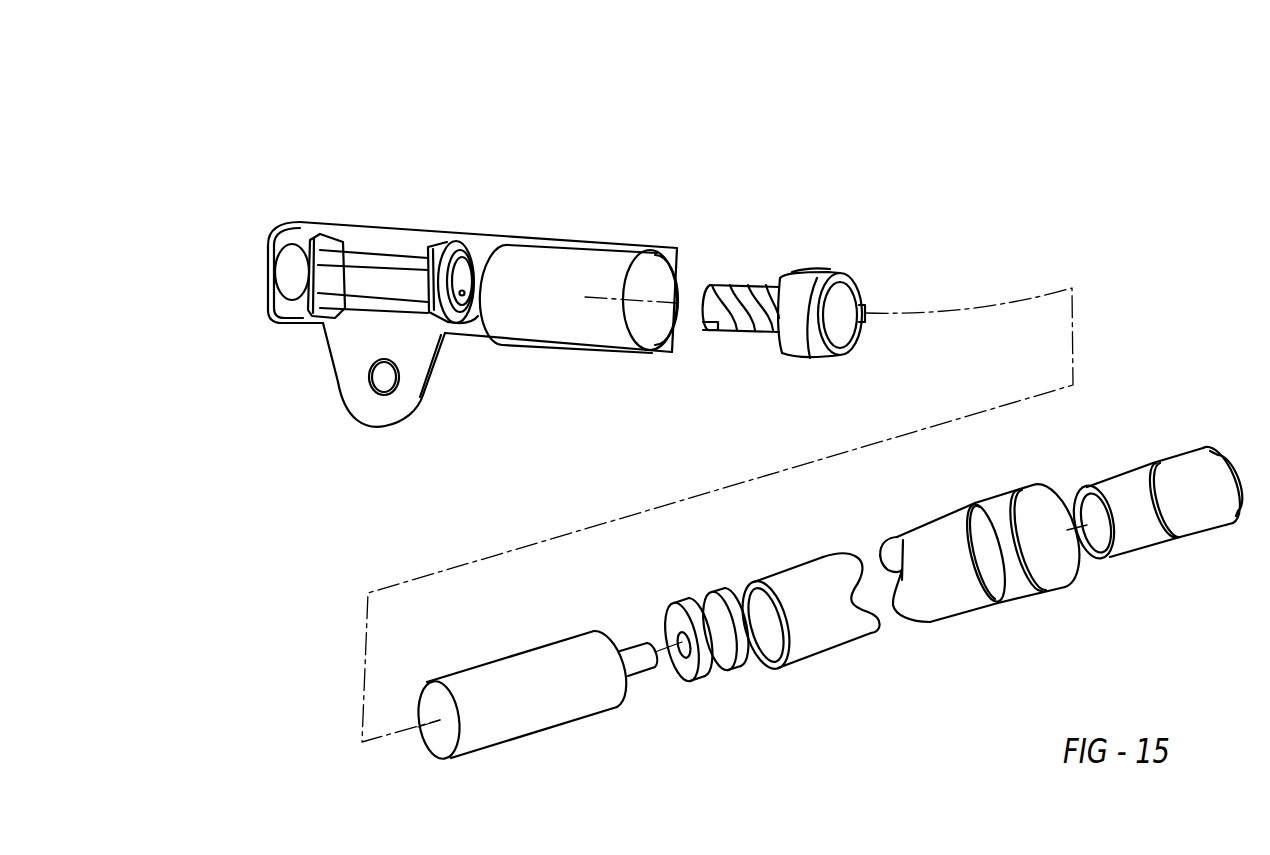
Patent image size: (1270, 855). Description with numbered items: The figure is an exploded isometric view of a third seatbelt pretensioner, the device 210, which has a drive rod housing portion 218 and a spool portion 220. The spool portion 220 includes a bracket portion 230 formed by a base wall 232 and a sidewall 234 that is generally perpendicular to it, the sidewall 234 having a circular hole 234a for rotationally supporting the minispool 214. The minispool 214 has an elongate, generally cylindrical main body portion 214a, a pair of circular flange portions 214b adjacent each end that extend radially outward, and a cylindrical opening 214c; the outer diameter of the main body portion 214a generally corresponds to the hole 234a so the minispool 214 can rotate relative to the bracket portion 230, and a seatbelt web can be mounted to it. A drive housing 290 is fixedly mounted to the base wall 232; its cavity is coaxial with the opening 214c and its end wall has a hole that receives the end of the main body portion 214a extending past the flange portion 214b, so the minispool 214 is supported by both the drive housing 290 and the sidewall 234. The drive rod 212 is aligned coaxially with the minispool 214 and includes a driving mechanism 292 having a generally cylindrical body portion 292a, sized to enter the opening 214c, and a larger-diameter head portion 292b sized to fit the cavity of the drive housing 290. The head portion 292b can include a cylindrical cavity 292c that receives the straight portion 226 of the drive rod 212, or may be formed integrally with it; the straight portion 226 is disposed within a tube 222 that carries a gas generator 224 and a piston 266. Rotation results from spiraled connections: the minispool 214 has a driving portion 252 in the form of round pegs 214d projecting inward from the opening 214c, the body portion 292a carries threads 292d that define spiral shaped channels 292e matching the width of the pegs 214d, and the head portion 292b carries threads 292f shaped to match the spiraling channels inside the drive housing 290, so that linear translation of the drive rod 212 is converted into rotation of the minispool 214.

The device 210 is at (931, 112).
The drive rod 212 is at (473, 720).
The minispool 214 is at (372, 256).
The main body portion 214a is at (452, 248).
The circular flange portions 214b is at (335, 238).
The cylindrical opening 214c is at (463, 294).
The round pegs 214d is at (587, 265).
The drive rod housing portion 218 is at (615, 740).
The spool portion 220 is at (633, 162).
The tube 222 is at (967, 593).
The gas generator 224 is at (1133, 533).
The straight portion 226 is at (533, 687).
The bracket portion 230 is at (418, 357).
The base wall 232 is at (350, 360).
The sidewall 234 is at (293, 230).
The circular hole 234a is at (285, 288).
The driving portion 252 is at (480, 300).
The piston 266 is at (722, 648).
The drive housing 290 is at (637, 232).
The driving mechanism 292 is at (756, 332).
The body portion 292a is at (713, 328).
The head portion 292b is at (836, 356).
The cylindrical cavity 292c is at (850, 342).
The threads 292d is at (773, 282).
The spiral shaped channels 292e is at (748, 297).
The threads 292f is at (808, 358).